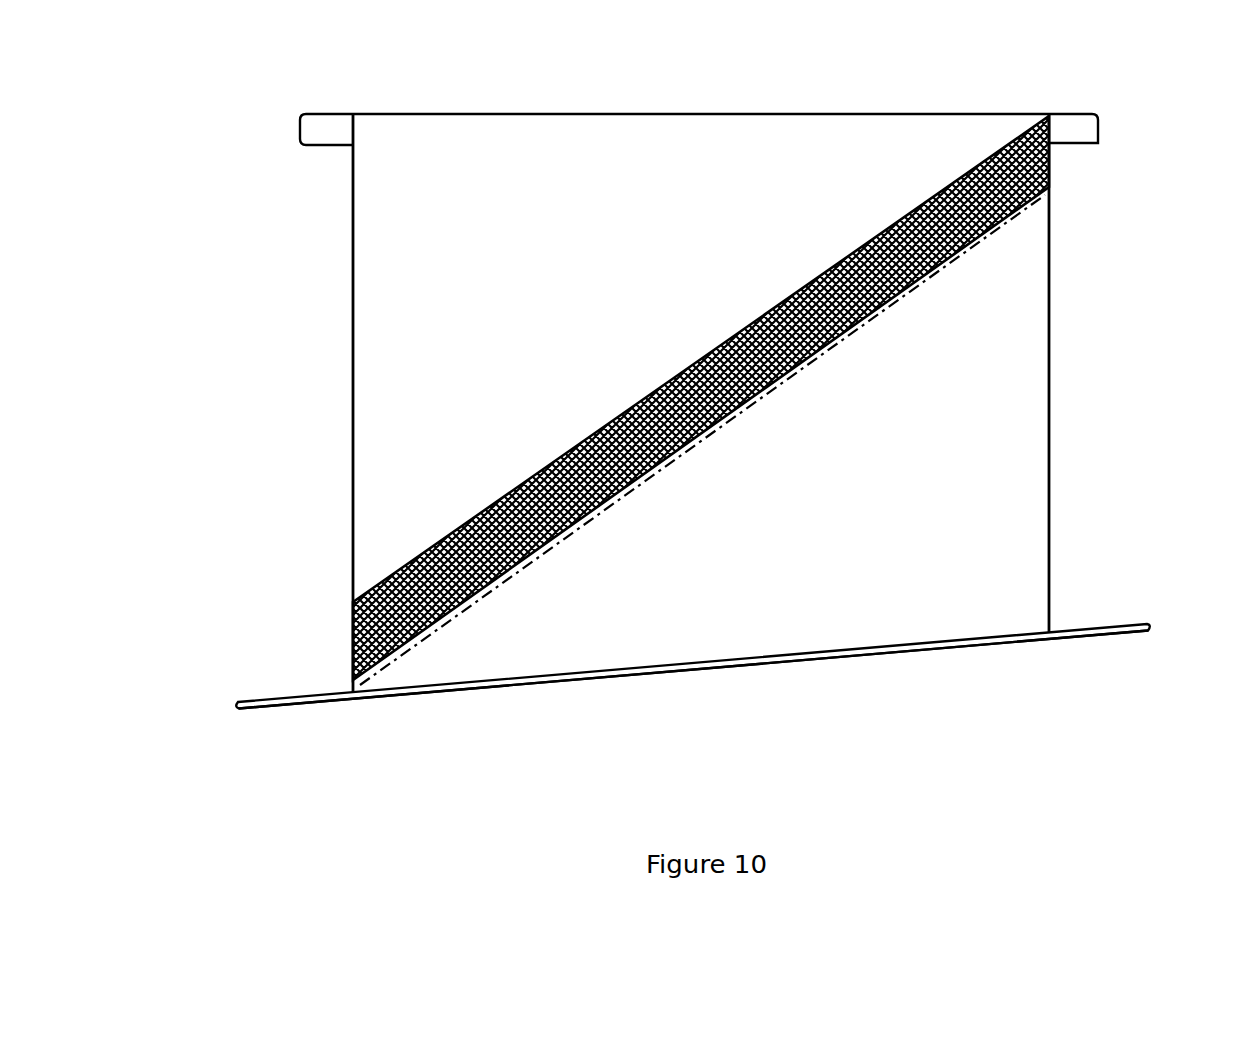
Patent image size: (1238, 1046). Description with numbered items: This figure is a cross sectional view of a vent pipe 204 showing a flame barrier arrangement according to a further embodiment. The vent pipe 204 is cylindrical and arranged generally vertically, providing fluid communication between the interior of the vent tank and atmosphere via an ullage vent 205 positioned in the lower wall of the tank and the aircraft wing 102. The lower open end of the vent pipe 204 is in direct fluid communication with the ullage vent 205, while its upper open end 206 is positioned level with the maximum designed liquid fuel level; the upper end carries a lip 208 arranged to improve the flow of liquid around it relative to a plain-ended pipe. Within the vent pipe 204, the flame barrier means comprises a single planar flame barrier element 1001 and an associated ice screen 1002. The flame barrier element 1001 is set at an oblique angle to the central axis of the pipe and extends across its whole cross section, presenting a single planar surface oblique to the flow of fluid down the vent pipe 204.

The upper open end 206 is at (958, 120).
The lip 208 is at (300, 145).
The vent pipe 204 is at (352, 435).
The flame barrier element 1001 is at (483, 547).
The ice screen 1002 is at (840, 344).
The aircraft wing 102 is at (266, 693).
The ullage vent 205 is at (983, 642).